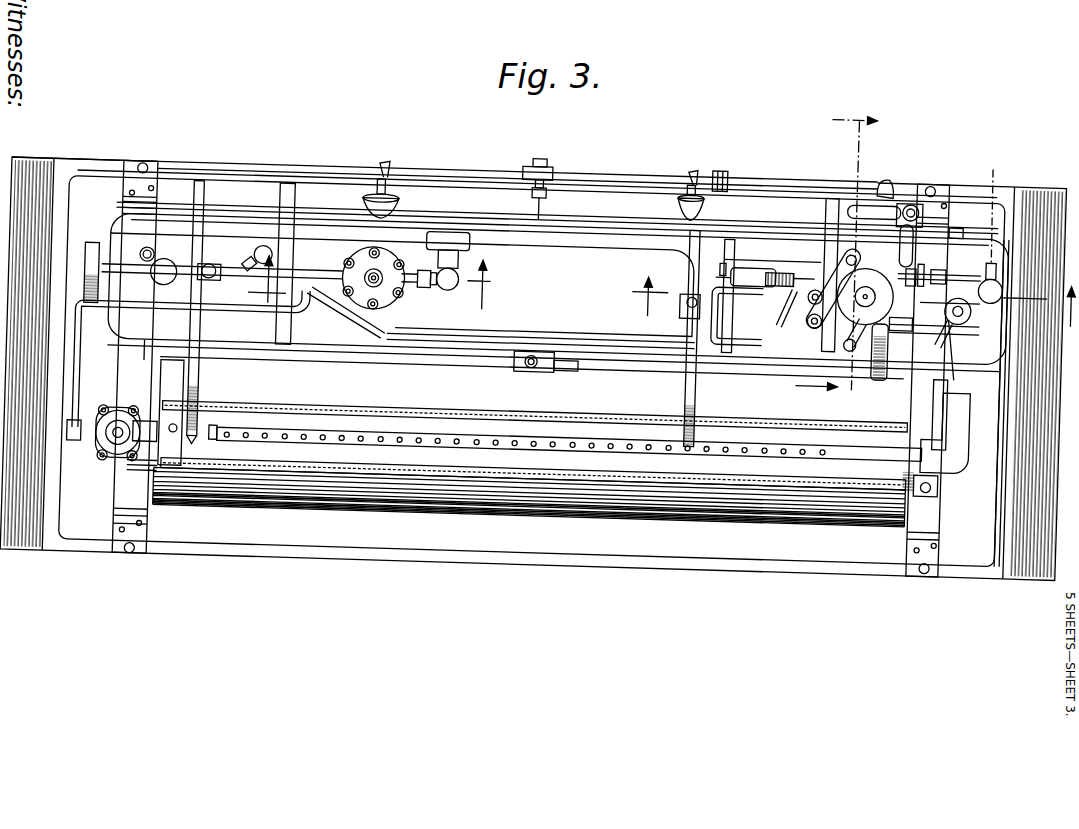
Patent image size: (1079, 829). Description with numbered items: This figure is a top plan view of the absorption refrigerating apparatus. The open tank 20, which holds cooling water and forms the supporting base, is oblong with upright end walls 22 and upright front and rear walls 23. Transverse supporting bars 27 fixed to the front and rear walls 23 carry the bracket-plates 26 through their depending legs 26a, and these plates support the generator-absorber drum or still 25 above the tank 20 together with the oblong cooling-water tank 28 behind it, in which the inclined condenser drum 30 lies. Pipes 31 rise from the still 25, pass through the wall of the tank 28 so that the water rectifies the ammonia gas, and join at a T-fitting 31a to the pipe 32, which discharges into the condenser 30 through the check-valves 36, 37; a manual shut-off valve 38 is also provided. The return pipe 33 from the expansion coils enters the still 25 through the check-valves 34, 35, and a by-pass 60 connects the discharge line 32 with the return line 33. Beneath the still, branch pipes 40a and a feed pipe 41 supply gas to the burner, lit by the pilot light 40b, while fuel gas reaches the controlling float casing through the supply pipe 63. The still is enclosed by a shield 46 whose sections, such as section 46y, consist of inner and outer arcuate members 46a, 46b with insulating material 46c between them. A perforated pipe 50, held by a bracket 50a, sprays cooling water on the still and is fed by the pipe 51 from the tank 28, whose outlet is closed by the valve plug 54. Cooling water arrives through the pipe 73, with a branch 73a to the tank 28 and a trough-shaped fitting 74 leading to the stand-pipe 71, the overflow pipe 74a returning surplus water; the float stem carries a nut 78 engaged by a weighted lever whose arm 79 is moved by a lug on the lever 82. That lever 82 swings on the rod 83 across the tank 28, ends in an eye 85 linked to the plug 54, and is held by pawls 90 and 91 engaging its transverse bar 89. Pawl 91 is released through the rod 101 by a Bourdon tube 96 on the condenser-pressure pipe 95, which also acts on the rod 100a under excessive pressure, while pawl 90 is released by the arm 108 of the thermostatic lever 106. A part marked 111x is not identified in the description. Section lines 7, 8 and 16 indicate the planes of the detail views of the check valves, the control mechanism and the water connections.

The open tank 20 is at (256, 156).
The upright end walls 22 is at (535, 368).
The upright front and rear walls 23 is at (202, 359).
The drum or still 25 is at (159, 357).
The bracket-plates 26 is at (983, 403).
The depending legs 26a is at (945, 466).
The horizontal supporting bars 27 is at (111, 156).
The oblong tank 28 is at (315, 204).
The drum (condenser) 30 is at (215, 338).
The pipes 31 is at (200, 238).
The T-fitting 31a is at (448, 219).
The pipe 32 is at (347, 258).
The return pipe 33 is at (183, 472).
The check-valve 34 is at (104, 448).
The check-valve 35 is at (112, 466).
The check valve 36 is at (459, 273).
The check valve 37 is at (400, 286).
The shut-off valve 38 is at (258, 240).
The branch pipes 40a is at (417, 160).
The pilot light 40b is at (543, 339).
The feed pipe 41 is at (612, 160).
The shield 46 is at (603, 503).
The inner arcuate sheet metal member 46a is at (419, 447).
The outer arcuate sheet metal member 46b is at (481, 451).
The layer of non-heat conducting material 46c is at (531, 450).
The shield section 46y is at (612, 349).
The perforated pipe 50 is at (851, 356).
The bracket 50a is at (250, 399).
The pipe 51 is at (975, 352).
The valve plug 54 is at (991, 205).
The by-pass 60 is at (272, 303).
The fuel gas supply pipe 63 is at (864, 324).
The stand-pipe 71 is at (812, 296).
The pipe 73 is at (887, 183).
The branch connection 73a is at (908, 235).
The horizontal trough-shaped fitting 74 is at (858, 225).
The overflow pipe 74a is at (812, 289).
The nut or pin 78 is at (1002, 197).
The arm 79 is at (1017, 199).
The vertically swinging lever 82 is at (737, 316).
The rod 83 is at (690, 296).
The eye 85 is at (950, 313).
The transverse bar 89 is at (923, 272).
The pawl 90 is at (934, 333).
The pawl 91 is at (944, 272).
The pipe 95 is at (495, 327).
The Bourdon spring tube 96 is at (771, 263).
The rod 100a is at (765, 266).
The rod 101 is at (798, 284).
The spring controlled lever 106 is at (945, 450).
The arm 108 is at (972, 308).
The cam 111x is at (879, 261).
The section line 7— 7 is at (376, 283).
The section line 8— 8 is at (855, 290).
The section line 16— 16 is at (849, 261).